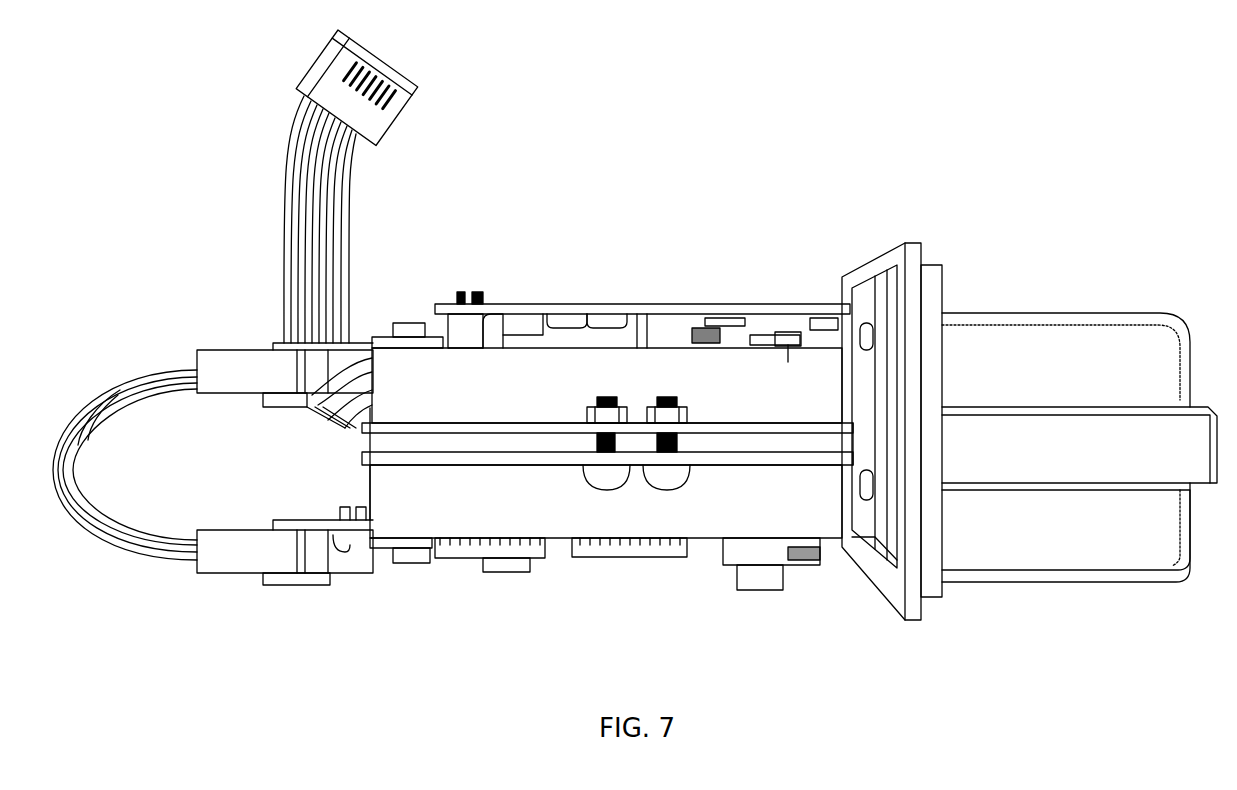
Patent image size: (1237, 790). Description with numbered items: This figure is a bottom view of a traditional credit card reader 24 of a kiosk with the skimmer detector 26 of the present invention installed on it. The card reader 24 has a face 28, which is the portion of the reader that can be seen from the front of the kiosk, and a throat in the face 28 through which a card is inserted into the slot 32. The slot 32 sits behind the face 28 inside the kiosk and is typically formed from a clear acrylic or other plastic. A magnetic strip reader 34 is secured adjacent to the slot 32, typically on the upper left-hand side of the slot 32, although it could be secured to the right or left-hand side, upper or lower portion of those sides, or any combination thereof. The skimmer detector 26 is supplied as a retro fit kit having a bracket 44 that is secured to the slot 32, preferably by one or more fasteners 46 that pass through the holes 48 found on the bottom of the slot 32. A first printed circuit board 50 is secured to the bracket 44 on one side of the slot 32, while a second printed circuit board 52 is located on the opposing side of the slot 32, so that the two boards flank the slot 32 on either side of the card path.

The credit card reader 24 is at (1050, 251).
The skimmer detector 26 is at (665, 226).
The face 28 is at (1063, 585).
The slot 32 is at (885, 580).
The magnetic strip reader 34 is at (607, 302).
The bracket 44 is at (788, 332).
The fasteners 46 is at (608, 468).
The holes 48 is at (582, 413).
The first printed circuit board 50 is at (357, 550).
The second printed circuit board 52 is at (280, 327).